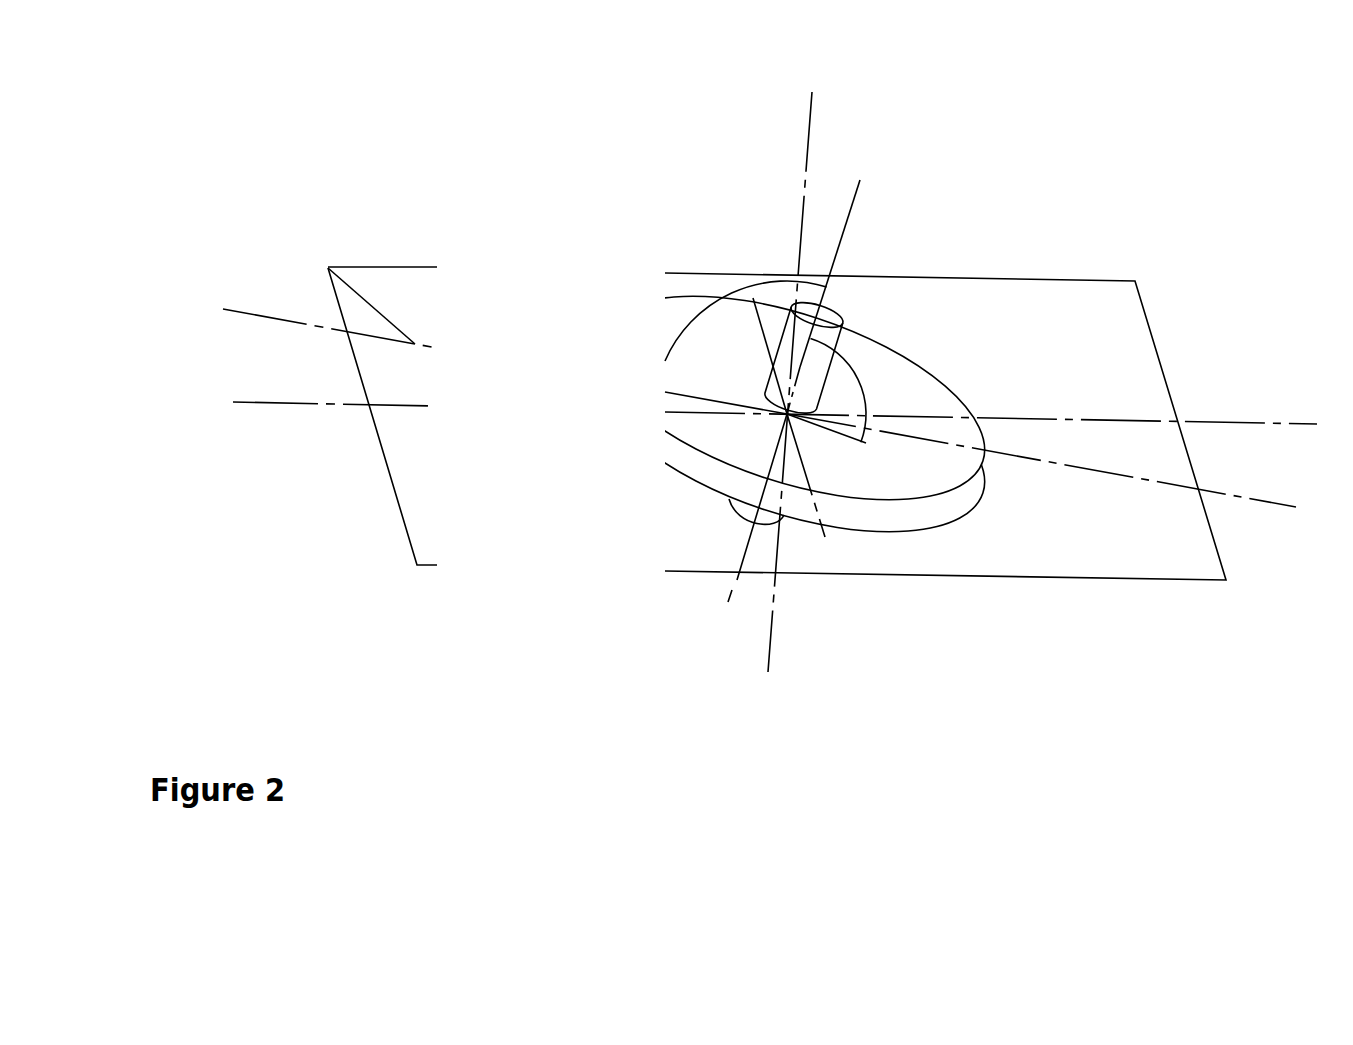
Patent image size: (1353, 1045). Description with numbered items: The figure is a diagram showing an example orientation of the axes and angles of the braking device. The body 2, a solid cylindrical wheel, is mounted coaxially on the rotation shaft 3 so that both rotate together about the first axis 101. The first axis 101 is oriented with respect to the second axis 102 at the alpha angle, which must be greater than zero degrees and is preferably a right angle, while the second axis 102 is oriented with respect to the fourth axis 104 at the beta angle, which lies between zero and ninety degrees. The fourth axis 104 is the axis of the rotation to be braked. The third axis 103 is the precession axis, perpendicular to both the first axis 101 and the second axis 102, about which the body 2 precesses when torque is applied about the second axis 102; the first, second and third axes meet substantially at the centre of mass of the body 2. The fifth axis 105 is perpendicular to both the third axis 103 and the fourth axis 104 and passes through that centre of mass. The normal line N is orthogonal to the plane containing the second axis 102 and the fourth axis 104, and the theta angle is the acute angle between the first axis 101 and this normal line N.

The body 2 is at (900, 383).
The rotation shaft 3 is at (825, 320).
The first axis 101 is at (855, 208).
The second axis 102 is at (328, 268).
The third axis 103 is at (818, 515).
The fourth axis 104 is at (402, 407).
The fifth axis 105 is at (810, 162).
The normal line N is at (880, 450).